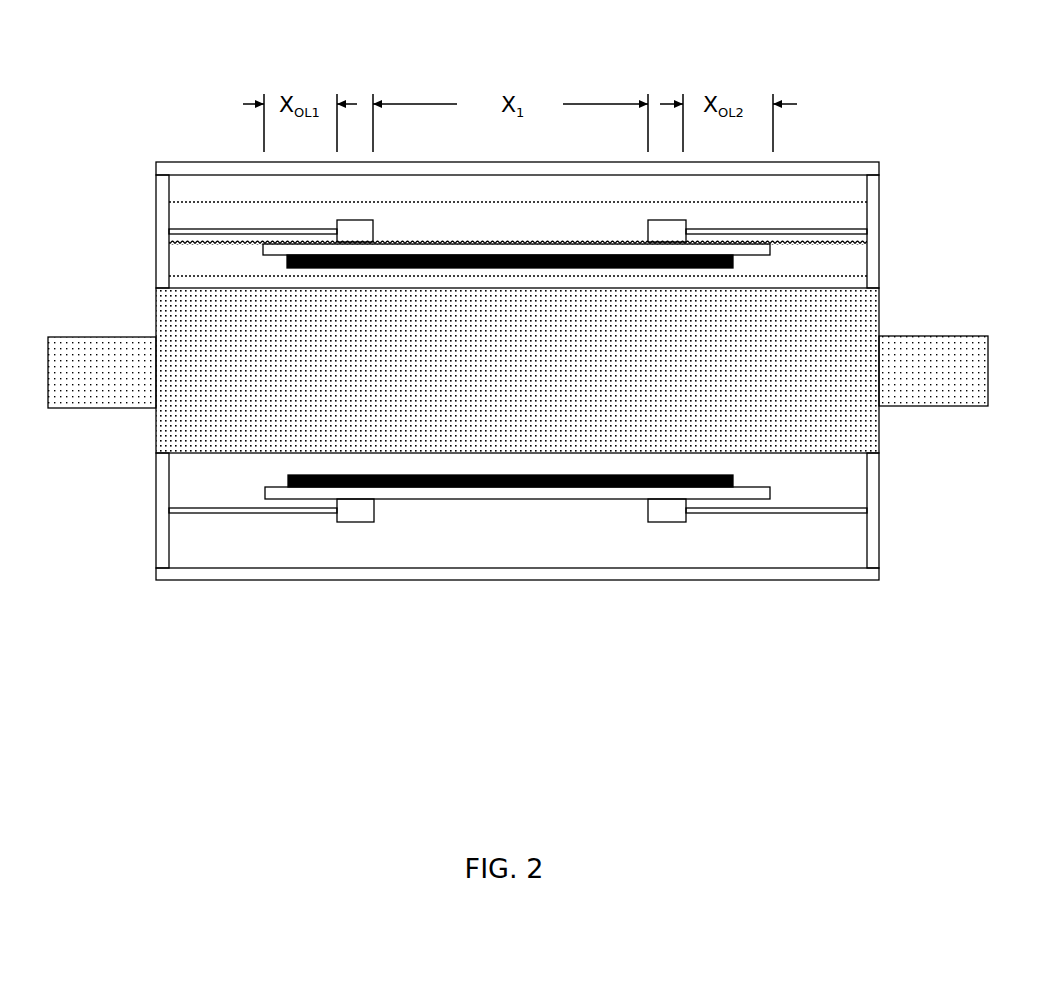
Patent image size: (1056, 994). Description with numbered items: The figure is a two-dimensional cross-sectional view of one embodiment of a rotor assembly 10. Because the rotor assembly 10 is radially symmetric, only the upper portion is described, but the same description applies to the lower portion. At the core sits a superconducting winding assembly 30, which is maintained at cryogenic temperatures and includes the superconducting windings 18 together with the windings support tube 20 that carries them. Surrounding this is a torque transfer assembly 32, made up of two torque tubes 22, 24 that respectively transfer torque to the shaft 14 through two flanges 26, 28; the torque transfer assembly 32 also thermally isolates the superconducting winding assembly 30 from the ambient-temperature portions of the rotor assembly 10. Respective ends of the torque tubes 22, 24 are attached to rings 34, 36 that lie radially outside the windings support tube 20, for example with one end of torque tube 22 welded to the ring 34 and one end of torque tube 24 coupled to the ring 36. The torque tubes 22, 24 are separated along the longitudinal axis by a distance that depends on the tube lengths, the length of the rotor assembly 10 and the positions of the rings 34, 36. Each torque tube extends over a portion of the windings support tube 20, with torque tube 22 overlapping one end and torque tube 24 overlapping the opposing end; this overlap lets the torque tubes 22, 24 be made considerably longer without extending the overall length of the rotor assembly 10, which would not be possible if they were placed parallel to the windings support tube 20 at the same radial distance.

The rotor assembly 10 is at (932, 50).
The shaft 14 is at (977, 333).
The superconducting windings 18 is at (287, 265).
The windings support tube 20 is at (263, 248).
The torque tube 22 is at (232, 230).
The torque tube 24 is at (732, 229).
The flange 26 is at (155, 222).
The flange 28 is at (880, 233).
The superconducting winding assembly 30 is at (800, 275).
The torque transfer assembly 32 is at (800, 201).
The ring 34 is at (355, 371).
The ring 36 is at (667, 371).